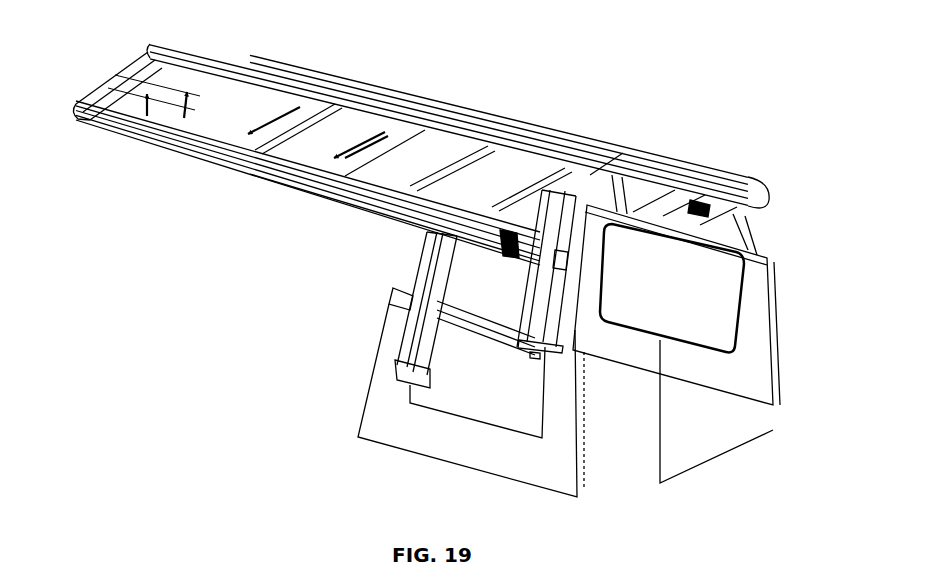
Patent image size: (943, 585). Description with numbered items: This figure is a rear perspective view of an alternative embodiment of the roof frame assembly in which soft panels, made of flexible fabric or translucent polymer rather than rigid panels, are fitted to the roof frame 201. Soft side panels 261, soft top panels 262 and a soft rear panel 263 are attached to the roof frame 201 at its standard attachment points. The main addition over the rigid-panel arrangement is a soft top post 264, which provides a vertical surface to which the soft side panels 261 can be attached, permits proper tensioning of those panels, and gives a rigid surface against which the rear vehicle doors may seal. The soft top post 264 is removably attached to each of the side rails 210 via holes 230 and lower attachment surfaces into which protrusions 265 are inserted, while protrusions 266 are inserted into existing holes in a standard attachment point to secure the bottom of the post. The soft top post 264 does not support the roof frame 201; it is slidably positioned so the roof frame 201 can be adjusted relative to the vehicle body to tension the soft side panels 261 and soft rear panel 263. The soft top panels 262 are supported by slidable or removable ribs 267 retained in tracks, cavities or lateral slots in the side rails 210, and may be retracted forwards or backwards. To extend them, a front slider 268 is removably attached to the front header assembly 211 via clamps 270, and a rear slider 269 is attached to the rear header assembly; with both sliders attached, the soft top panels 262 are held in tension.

The roof frame 201 is at (387, 78).
The side rails 210 is at (414, 103).
The front header assembly 211 is at (137, 152).
The holes 230 is at (557, 187).
The soft side panels 261 is at (606, 352).
The soft top panels 262 is at (342, 192).
The soft rear panel 263 is at (752, 447).
The soft top post 264 is at (522, 278).
The protrusions 265 is at (576, 148).
The protrusions 266 is at (510, 343).
The ribs 267 is at (250, 156).
The front slider 268 is at (172, 160).
The rear slider 269 is at (742, 226).
The clamps 270 is at (182, 65).